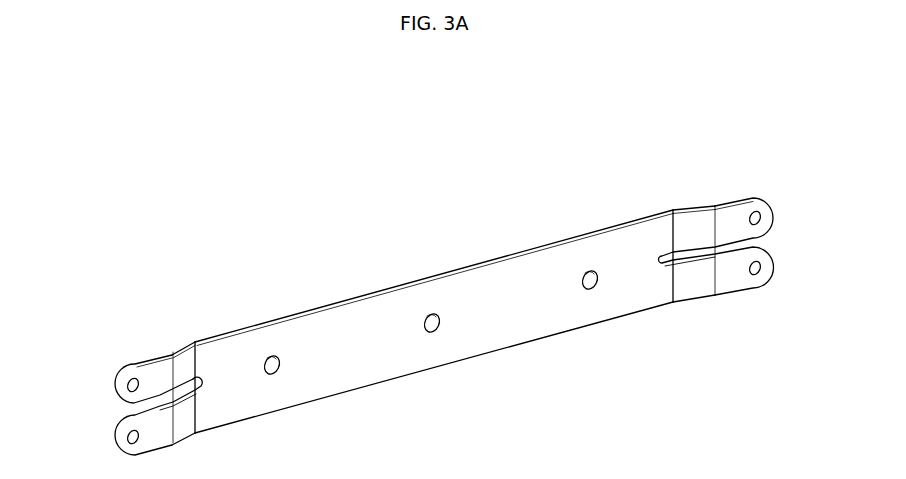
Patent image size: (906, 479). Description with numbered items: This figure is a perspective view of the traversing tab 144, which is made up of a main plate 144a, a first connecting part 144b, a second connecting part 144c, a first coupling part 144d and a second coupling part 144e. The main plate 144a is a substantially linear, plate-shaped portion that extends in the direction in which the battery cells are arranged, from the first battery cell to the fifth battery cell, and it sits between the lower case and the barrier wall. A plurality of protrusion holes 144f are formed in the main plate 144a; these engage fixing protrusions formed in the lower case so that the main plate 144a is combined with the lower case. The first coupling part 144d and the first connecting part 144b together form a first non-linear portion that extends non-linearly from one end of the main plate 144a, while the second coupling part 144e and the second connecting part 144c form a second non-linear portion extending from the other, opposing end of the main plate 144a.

The traversing tab 144 is at (134, 183).
The main plate 144a is at (357, 312).
The first connecting part 144b is at (140, 368).
The second connecting part 144c is at (735, 215).
The first coupling part 144d is at (187, 355).
The second coupling part 144e is at (695, 220).
The protrusion holes 144f is at (440, 322).